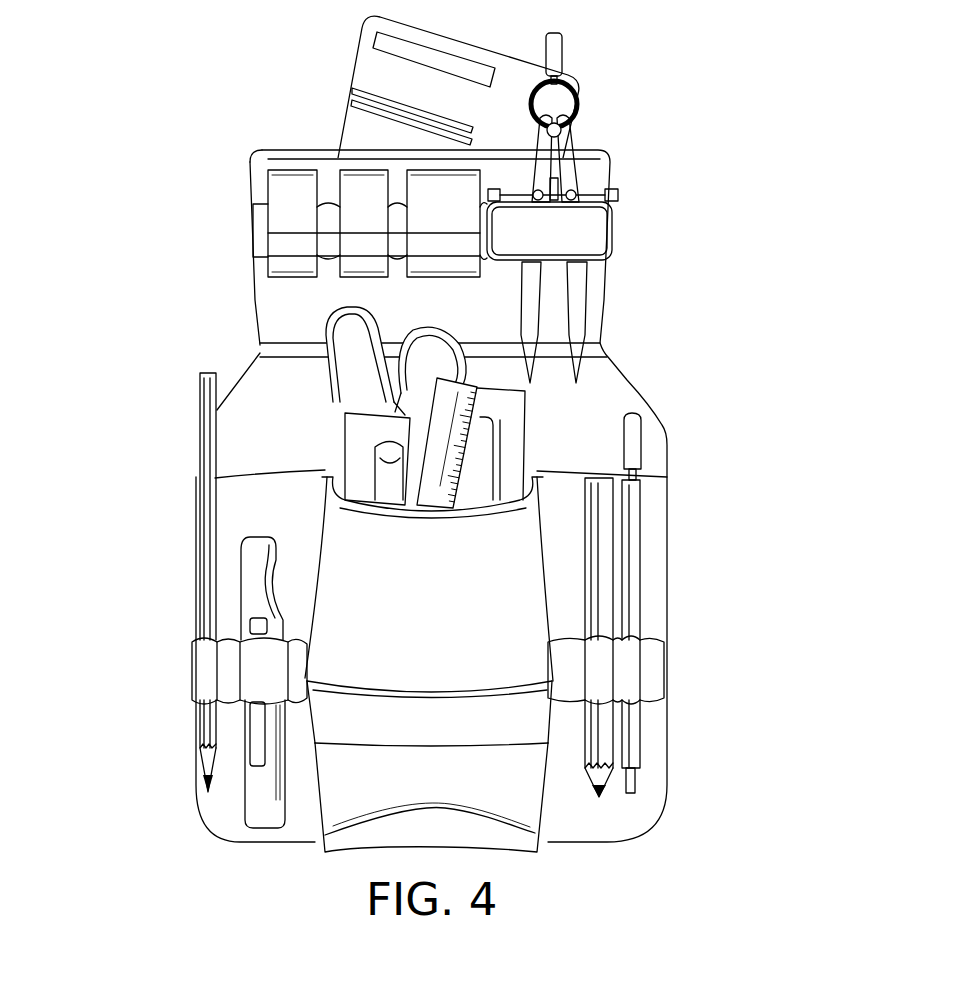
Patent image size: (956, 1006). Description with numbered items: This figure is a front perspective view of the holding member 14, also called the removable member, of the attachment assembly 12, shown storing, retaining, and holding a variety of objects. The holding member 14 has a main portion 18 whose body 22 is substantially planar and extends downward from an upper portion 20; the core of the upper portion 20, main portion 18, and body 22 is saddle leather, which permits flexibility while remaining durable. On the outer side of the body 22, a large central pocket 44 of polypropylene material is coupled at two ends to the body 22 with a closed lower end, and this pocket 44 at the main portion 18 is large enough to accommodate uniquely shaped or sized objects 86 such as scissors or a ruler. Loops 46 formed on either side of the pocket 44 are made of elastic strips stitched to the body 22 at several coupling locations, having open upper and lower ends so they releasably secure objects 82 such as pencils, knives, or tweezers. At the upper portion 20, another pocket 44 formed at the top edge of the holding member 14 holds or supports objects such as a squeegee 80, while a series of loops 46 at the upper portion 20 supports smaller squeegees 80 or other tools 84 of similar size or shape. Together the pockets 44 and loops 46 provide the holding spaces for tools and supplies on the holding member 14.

The attachment assembly 12 is at (808, 74).
The holding member 14 is at (727, 232).
The main portion 18 is at (148, 567).
The upper portion 20 is at (210, 267).
The body 22 is at (255, 423).
The pocket 44 is at (606, 134).
The loops 46 is at (523, 220).
The squeegee 80 is at (355, 193).
The objects 82 is at (257, 558).
The tools 84 is at (567, 183).
The objects 86 is at (453, 398).